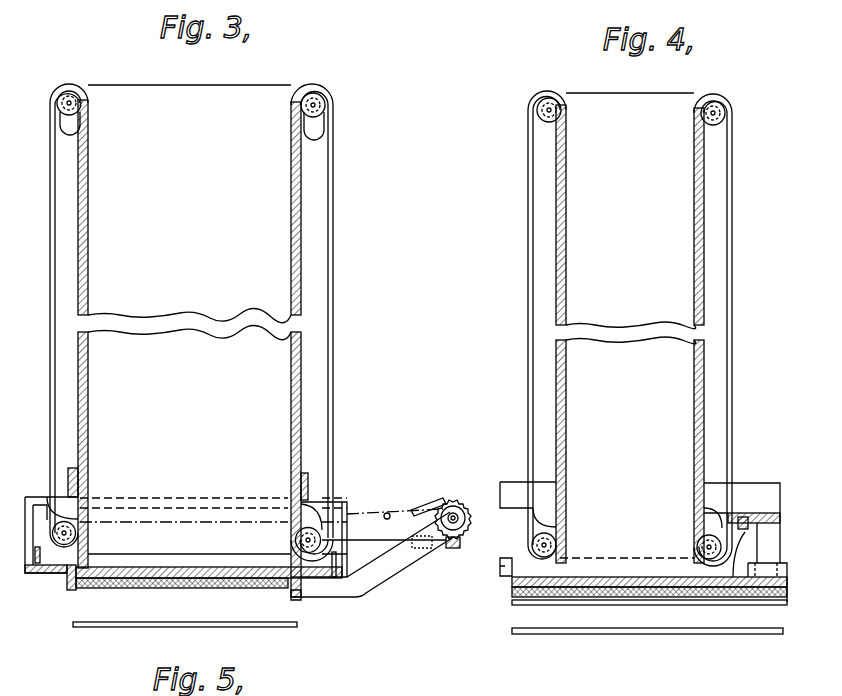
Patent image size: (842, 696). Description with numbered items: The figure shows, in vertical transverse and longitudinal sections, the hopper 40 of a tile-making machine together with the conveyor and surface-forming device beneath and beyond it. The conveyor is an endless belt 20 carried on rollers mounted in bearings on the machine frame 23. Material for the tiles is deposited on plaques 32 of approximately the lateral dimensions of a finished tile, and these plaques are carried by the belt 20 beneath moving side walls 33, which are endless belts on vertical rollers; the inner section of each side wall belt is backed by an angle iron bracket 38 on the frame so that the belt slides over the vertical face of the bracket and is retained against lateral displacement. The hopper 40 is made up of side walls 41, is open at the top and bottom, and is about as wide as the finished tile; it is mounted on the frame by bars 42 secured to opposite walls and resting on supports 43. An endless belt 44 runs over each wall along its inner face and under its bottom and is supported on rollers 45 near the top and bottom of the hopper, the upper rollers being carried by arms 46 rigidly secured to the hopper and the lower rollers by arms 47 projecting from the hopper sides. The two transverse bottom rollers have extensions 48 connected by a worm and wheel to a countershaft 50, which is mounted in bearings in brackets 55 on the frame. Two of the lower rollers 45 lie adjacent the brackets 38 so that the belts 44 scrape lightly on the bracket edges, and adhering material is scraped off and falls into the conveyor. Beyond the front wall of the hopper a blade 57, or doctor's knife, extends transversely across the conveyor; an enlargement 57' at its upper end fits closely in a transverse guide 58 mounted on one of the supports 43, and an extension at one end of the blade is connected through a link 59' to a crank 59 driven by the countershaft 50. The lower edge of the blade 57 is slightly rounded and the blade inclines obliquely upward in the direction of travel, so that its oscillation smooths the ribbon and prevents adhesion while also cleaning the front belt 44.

In FIG. 3, the endless belt 20 is at (145, 587).
In FIG. 4, the endless belt 20 is at (612, 595).
In FIG. 3, the machine frame 23 is at (297, 577).
In FIG. 3, the plaques 32 is at (87, 583).
In FIG. 4, the plaques 32 is at (678, 583).
In FIG. 3, the moving side walls 33 is at (92, 577).
In FIG. 4, the moving side walls 33 is at (518, 568).
In FIG. 3, the bracket 38 is at (55, 568).
In FIG. 4, the bracket 38 is at (500, 563).
In FIG. 3, the hopper 40 is at (342, 128).
In FIG. 4, the hopper 40 is at (742, 152).
In FIG. 3, the side walls 41 is at (301, 300).
In FIG. 4, the side walls 41 is at (704, 253).
In FIG. 3, the bars 42 is at (68, 477).
In FIG. 4, the bars 42 is at (507, 482).
In FIG. 3, the supports 43 is at (32, 528).
In FIG. 4, the supports 43 is at (767, 553).
In FIG. 3, the endless belt 44 is at (130, 95).
In FIG. 4, the endless belt 44 is at (620, 85).
In FIG. 3, the rollers 45 is at (67, 93).
In FIG. 4, the rollers 45 is at (542, 100).
In FIG. 3, the arms 46 is at (67, 128).
In FIG. 3, the arms 47 is at (65, 510).
In FIG. 4, the arms 47 is at (537, 522).
In FIG. 3, the extensions 48 is at (376, 557).
In FIG. 3, the countershaft 50 is at (463, 510).
In FIG. 3, the brackets 55 is at (343, 617).
In FIG. 4, the blade 57 is at (728, 620).
In FIG. 3, the enlargement 57' is at (395, 500).
In FIG. 4, the enlargement 57' is at (762, 517).
In FIG. 3, the transverse guide 58 is at (218, 522).
In FIG. 4, the transverse guide 58 is at (742, 517).
In FIG. 3, the crank 59 is at (453, 500).
In FIG. 3, the link 59' is at (428, 482).